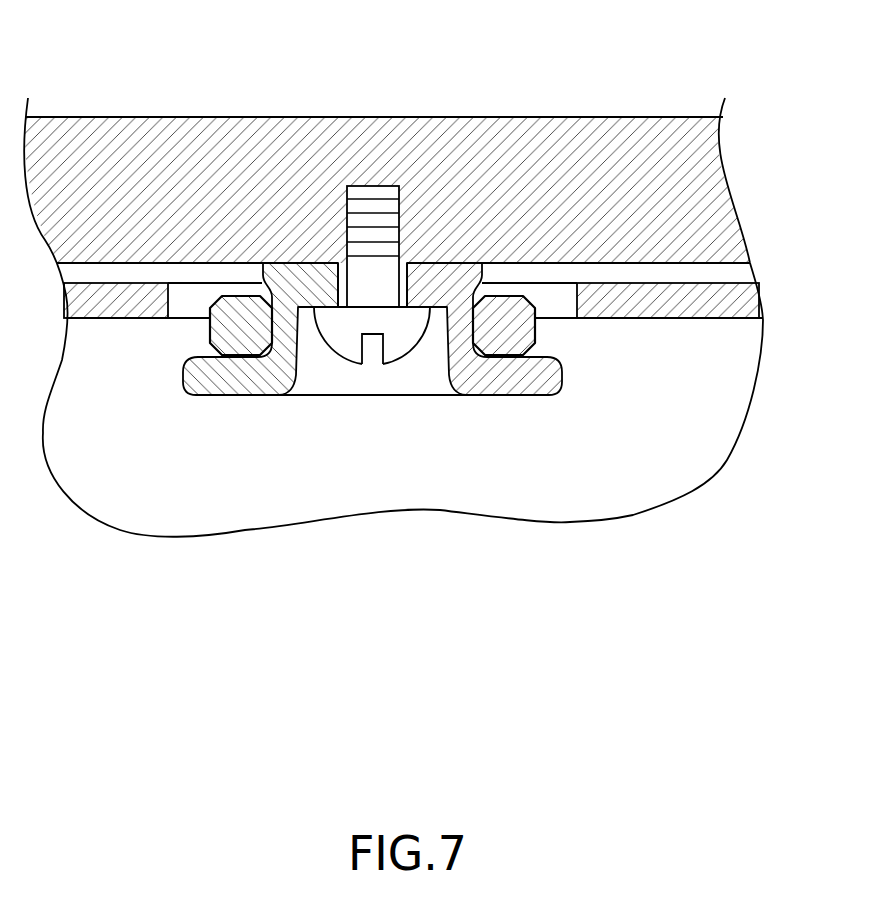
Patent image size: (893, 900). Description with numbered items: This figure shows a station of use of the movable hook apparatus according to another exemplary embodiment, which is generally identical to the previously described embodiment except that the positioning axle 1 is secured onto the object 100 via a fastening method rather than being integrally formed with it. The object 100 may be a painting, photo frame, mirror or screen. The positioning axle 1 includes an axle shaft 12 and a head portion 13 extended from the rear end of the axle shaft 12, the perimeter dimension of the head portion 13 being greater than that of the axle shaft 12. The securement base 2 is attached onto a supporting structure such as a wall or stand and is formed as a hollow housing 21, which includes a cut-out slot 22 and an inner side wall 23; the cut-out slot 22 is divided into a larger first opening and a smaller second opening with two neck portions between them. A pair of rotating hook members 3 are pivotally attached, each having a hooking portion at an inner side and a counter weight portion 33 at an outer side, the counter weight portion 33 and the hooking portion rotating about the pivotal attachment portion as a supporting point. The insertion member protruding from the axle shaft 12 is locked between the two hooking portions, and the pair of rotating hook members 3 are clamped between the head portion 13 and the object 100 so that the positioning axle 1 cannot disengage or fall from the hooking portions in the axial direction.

The object 100 is at (357, 145).
The positioning axle 1 is at (447, 432).
The axle shaft 12 is at (455, 330).
The head portion 13 is at (543, 382).
The securement base 2 is at (431, 243).
The hollow housing 21 is at (648, 295).
The cut-out slot 22 is at (553, 290).
The inner side wall 23 is at (675, 320).
The rotating hook member 3 is at (371, 226).
The counter weight portion 33 is at (243, 317).